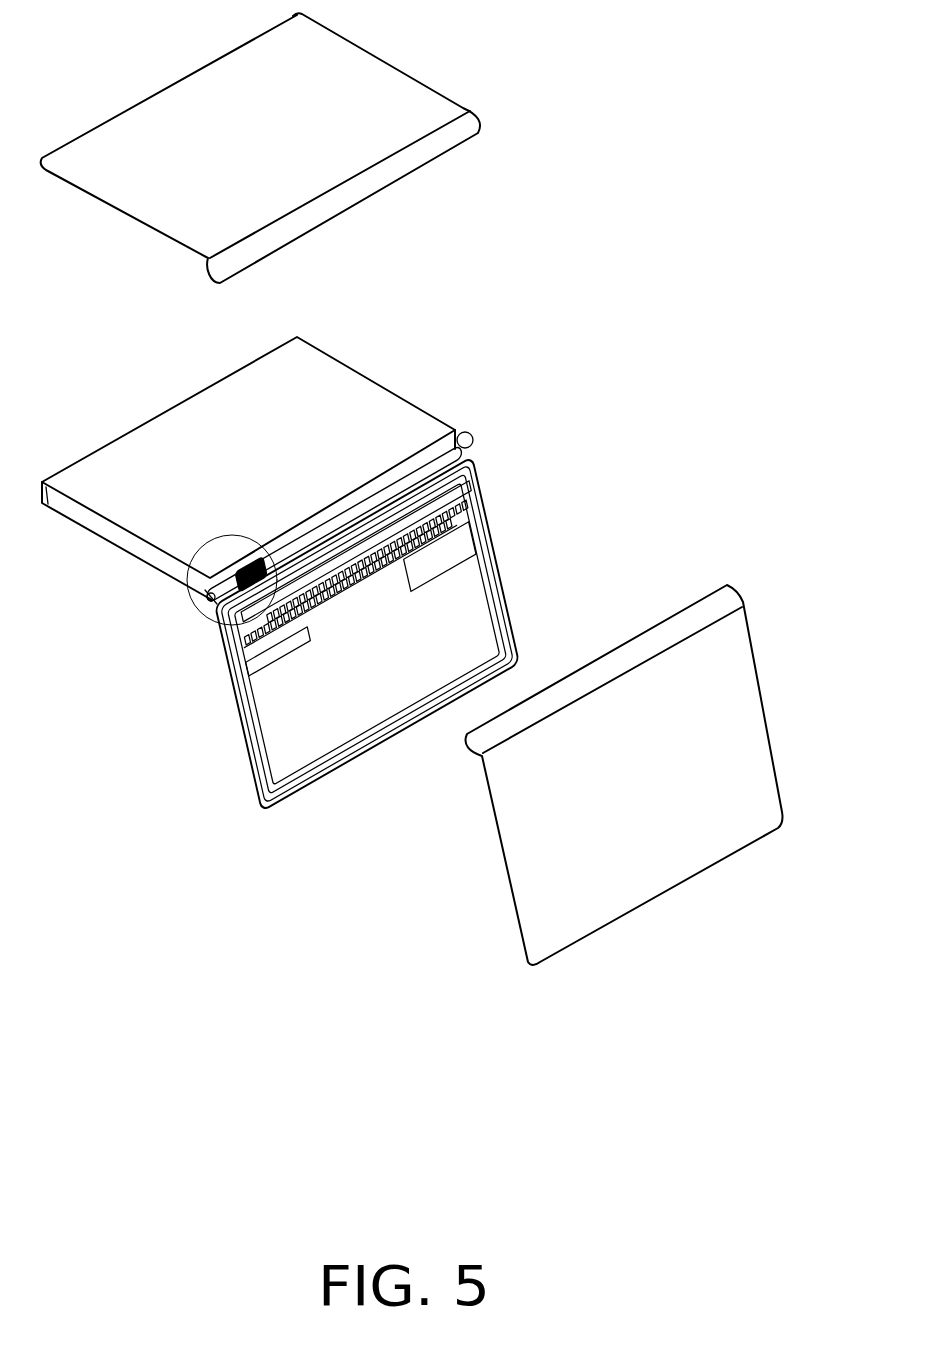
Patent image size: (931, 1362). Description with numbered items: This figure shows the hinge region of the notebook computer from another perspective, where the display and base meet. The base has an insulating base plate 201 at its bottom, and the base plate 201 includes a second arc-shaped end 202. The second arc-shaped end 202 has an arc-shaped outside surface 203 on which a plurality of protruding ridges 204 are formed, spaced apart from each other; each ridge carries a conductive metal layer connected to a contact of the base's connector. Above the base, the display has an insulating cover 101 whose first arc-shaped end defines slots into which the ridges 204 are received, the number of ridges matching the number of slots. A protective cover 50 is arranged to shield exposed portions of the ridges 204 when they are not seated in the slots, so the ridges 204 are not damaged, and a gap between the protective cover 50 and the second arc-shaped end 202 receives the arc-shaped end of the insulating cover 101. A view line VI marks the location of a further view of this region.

The protective cover 50 is at (373, 90).
The insulating cover 101 is at (632, 862).
The insulating base plate 201 is at (350, 397).
The second arc-shaped end 202 is at (412, 457).
The arc-shaped outside surface 203 is at (405, 497).
The protruding ridges 204 is at (206, 600).
The detail view circle VI is at (199, 586).